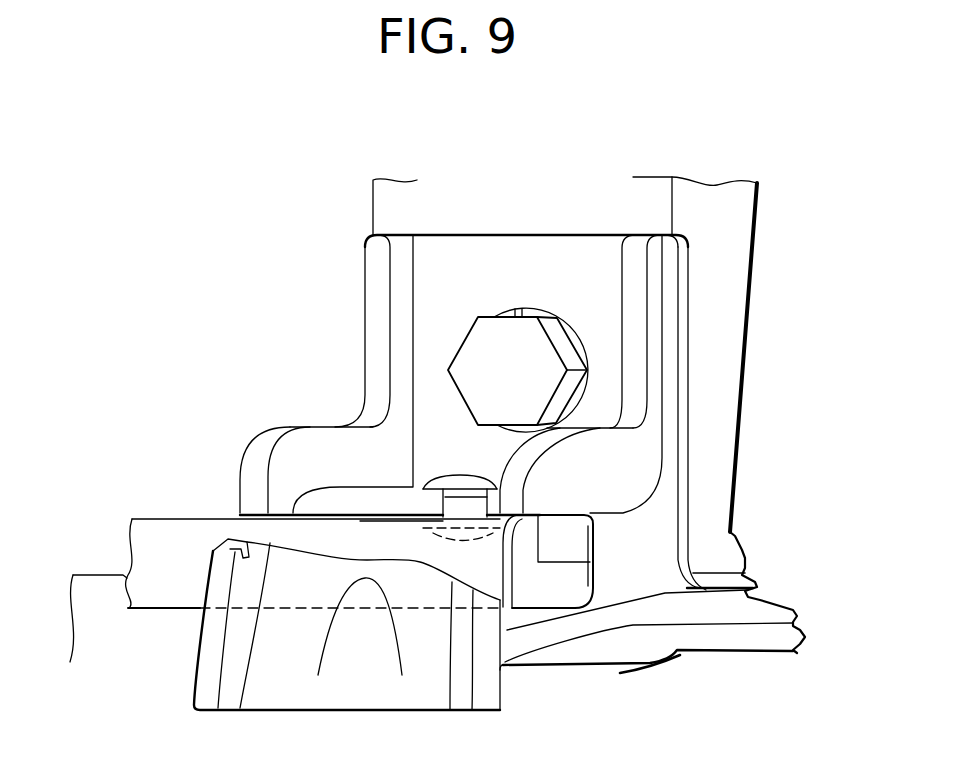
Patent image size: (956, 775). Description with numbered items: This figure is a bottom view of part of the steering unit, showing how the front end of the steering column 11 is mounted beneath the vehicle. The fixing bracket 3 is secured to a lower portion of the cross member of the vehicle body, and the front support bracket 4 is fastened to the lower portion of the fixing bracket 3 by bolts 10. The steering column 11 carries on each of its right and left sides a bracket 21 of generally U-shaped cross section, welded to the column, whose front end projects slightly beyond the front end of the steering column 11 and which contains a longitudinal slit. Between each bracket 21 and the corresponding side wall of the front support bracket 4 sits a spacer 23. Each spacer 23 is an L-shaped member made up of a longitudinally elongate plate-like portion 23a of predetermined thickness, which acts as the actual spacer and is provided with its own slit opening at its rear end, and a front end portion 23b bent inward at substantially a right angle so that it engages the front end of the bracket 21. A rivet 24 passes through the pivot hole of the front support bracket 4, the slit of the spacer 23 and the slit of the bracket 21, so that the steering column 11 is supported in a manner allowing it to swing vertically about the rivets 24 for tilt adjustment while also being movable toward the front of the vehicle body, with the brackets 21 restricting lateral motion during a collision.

The fixing bracket 3 is at (762, 236).
The front support bracket 4 is at (469, 230).
The bolt 10 is at (567, 348).
The steering column 11 is at (95, 570).
The bracket 21 is at (170, 514).
The spacer 23 is at (578, 535).
The plate-like portion 23a is at (381, 517).
The front end portion 23b is at (560, 548).
The rivet 24 is at (459, 476).